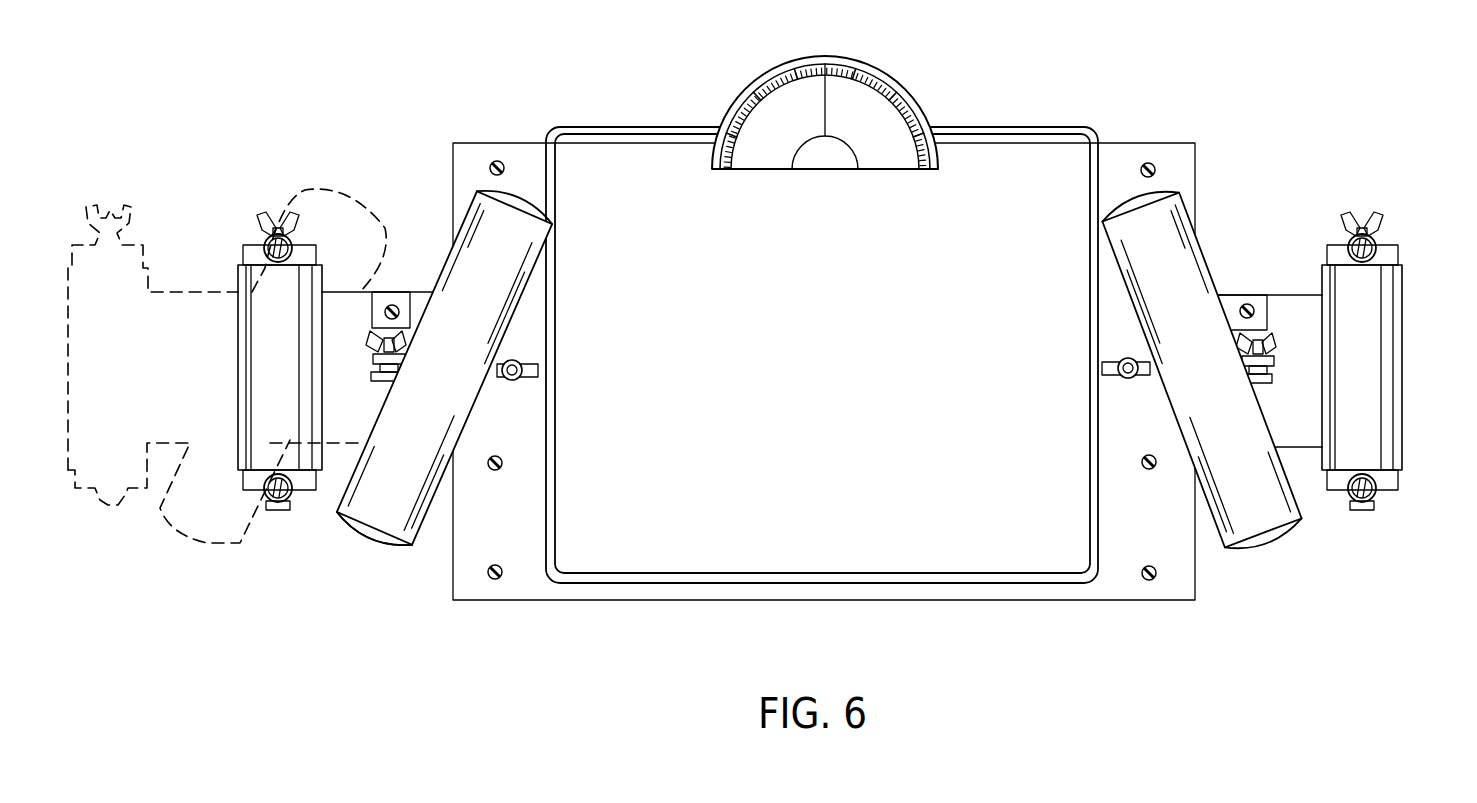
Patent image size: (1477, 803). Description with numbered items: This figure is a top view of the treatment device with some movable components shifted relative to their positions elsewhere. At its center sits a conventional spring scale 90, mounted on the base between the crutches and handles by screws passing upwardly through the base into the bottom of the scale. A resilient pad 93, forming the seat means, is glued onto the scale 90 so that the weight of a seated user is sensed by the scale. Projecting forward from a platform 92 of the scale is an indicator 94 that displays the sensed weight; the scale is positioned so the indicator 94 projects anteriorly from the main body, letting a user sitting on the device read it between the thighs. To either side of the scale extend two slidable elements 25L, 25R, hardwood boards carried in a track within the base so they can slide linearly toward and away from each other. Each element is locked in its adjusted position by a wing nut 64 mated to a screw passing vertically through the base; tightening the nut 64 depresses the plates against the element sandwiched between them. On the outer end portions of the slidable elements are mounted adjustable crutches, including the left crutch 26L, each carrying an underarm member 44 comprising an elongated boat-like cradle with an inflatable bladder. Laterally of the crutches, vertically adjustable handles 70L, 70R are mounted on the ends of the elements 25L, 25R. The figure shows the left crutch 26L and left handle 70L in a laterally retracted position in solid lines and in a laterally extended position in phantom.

The spring scale 90 is at (643, 118).
The platform 92 is at (818, 586).
The resilient pad 93 is at (690, 562).
The indicator 94 is at (884, 73).
The underarm member 44 is at (478, 435).
The wing nut 64 is at (530, 379).
The left slidable element 25L is at (176, 291).
The right slidable element 25R is at (1296, 295).
The left handle 70L is at (238, 362).
The right handle 70R is at (1404, 301).
The left crutch 26L is at (355, 550).